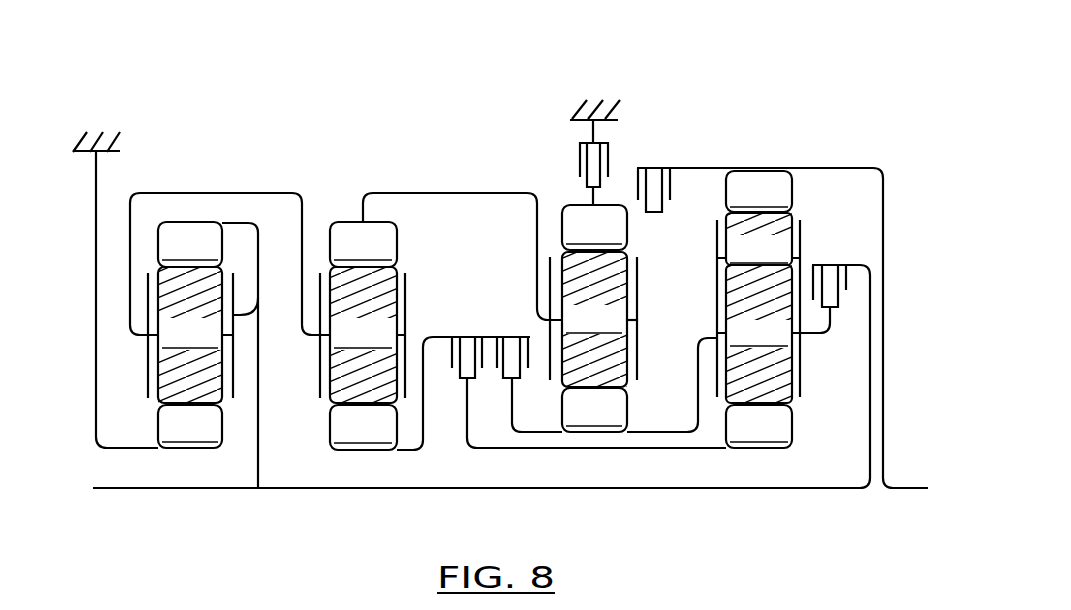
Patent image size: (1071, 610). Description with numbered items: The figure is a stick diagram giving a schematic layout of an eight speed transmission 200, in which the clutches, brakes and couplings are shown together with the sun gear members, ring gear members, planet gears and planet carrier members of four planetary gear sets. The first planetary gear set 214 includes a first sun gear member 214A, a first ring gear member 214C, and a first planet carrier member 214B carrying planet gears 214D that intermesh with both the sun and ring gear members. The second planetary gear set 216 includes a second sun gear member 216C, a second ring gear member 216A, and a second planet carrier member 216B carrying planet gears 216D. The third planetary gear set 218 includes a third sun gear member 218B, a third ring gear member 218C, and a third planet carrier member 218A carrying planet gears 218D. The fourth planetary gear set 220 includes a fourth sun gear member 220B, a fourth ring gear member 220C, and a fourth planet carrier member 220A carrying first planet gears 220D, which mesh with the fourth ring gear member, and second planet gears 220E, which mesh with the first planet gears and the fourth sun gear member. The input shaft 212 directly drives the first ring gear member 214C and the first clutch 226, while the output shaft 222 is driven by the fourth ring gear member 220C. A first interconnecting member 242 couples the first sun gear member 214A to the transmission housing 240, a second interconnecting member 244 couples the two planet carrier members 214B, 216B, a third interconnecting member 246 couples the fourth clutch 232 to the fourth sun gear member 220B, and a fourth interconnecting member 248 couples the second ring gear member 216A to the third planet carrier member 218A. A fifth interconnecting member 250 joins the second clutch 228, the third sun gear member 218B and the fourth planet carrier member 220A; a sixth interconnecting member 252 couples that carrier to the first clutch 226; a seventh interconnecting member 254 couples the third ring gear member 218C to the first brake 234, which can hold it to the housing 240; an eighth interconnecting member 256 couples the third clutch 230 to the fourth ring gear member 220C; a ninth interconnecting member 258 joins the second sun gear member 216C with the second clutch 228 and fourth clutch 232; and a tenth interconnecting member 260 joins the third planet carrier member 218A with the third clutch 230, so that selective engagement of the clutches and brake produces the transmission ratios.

The eight speed transmission 200 is at (805, 96).
The input shaft 212 is at (170, 490).
The first planetary gear set 214 is at (192, 341).
The first sun gear member 214A is at (190, 426).
The first planet carrier member 214B is at (260, 305).
The first ring gear member 214C is at (190, 244).
The planet gears 214D is at (190, 335).
The second planetary gear set 216 is at (378, 353).
The second ring gear member 216A is at (363, 244).
The second planet carrier member 216B is at (407, 290).
The second sun gear member 216C is at (363, 427).
The planet gears 216D is at (362, 335).
The third planetary gear set 218 is at (631, 344).
The third planet carrier member 218A is at (642, 290).
The third sun gear member 218B is at (594, 410).
The third ring gear member 218C is at (594, 227).
The planet gears 218D is at (593, 319).
The fourth planetary gear set 220 is at (792, 330).
The fourth planet carrier member 220A is at (843, 230).
The fourth sun gear member 220B is at (759, 426).
The fourth ring gear member 220C is at (759, 191).
The first planet gears 220D is at (758, 239).
The second planet gears 220E is at (758, 334).
The output shaft 222 is at (920, 487).
The first clutch 226 is at (847, 287).
The second clutch 228 is at (502, 370).
The third clutch 230 is at (670, 187).
The fourth clutch 232 is at (453, 373).
The first brake 234 is at (612, 162).
The transmission housing 240 is at (103, 152).
The first interconnecting member 242 is at (97, 337).
The second interconnecting member 244 is at (212, 192).
The third interconnecting member 246 is at (527, 449).
The fourth interconnecting member 248 is at (443, 192).
The fifth interconnecting member 250 is at (697, 378).
The sixth interconnecting member 252 is at (815, 336).
The seventh interconnecting member 254 is at (577, 195).
The eighth interconnecting member 256 is at (720, 167).
The ninth interconnecting member 258 is at (415, 370).
The tenth interconnecting member 260 is at (645, 320).